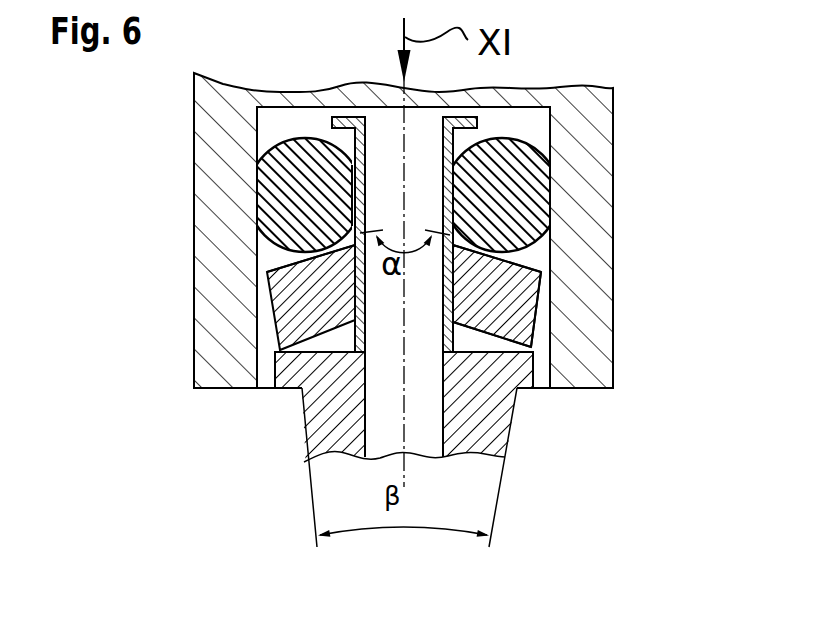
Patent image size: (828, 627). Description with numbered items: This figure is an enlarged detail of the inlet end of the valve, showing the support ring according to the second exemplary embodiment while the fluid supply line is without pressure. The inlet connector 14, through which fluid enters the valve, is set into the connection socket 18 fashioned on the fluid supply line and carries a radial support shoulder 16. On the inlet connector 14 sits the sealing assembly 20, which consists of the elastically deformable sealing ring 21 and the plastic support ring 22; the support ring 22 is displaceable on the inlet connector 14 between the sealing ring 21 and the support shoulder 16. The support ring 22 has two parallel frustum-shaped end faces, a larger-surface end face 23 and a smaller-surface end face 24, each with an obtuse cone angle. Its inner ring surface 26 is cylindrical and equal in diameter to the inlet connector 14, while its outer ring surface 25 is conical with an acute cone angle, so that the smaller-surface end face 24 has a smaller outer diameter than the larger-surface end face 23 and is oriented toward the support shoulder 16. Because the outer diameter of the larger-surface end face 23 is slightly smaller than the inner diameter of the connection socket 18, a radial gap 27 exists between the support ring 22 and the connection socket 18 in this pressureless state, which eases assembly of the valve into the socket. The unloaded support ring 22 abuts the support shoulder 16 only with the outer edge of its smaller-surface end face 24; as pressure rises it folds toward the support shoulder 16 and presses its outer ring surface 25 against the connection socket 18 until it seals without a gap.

The inlet connector 14 is at (317, 432).
The support shoulder 16 is at (282, 362).
The connection socket 18 is at (600, 132).
The sealing assembly 20 is at (238, 240).
The sealing ring 21 is at (262, 184).
The support ring 22 is at (282, 302).
The larger-surface end face 23 is at (535, 258).
The smaller-surface end face 24 is at (487, 345).
The outer ring surface 25 is at (548, 289).
The inner ring surface 26 is at (444, 290).
The radial gap 27 is at (262, 275).